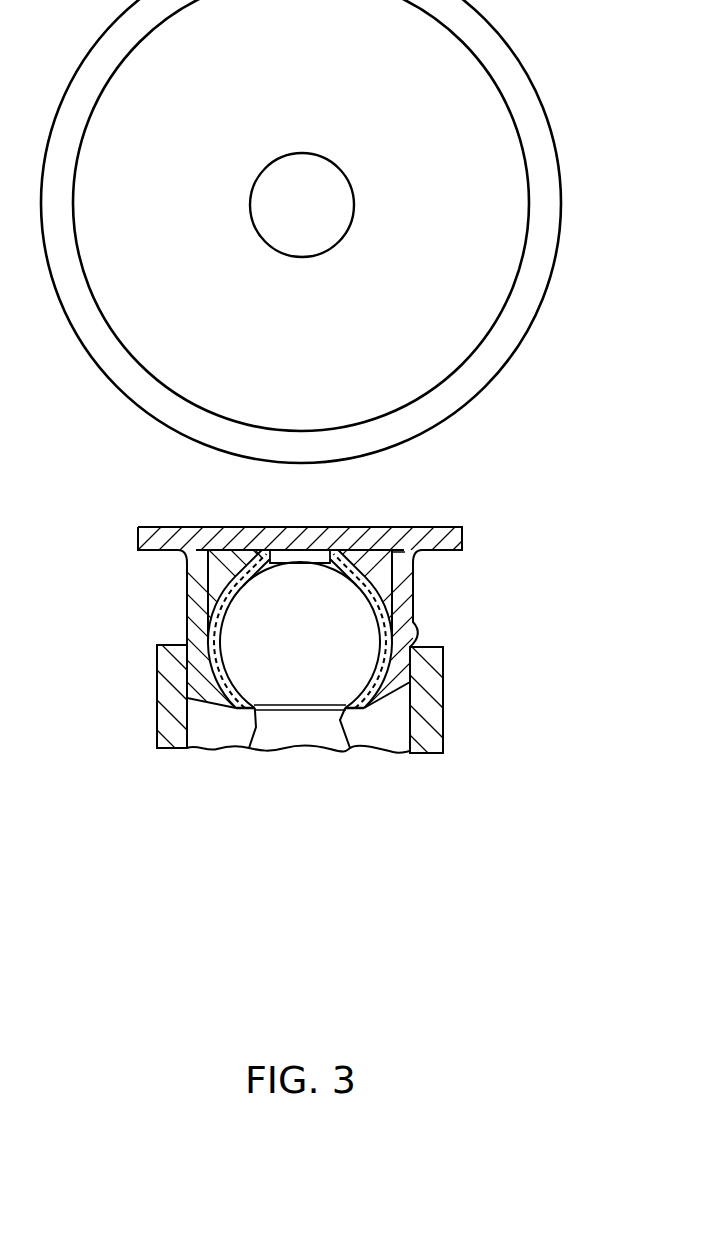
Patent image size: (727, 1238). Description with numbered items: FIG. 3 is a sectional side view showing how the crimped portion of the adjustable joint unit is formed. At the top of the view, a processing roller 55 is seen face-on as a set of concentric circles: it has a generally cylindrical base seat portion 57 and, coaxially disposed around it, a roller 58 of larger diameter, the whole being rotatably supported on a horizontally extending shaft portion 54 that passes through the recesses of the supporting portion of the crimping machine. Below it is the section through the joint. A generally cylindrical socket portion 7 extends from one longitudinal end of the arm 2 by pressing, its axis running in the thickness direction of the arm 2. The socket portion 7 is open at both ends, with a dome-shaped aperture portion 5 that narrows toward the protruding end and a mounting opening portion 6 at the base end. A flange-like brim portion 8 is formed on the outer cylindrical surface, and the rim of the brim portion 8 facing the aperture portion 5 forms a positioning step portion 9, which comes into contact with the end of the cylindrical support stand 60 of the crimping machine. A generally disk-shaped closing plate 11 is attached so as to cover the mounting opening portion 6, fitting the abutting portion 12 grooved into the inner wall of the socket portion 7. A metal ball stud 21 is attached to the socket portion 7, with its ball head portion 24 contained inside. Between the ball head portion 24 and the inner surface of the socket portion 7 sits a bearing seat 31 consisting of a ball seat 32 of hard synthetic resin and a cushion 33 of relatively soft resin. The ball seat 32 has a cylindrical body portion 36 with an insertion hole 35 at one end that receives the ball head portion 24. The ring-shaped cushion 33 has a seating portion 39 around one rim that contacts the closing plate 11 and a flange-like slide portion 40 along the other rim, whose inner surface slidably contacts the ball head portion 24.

The arm 2 is at (463, 542).
The aperture portion 5 is at (369, 706).
The mounting opening portion 6 is at (400, 547).
The socket portion 7 is at (416, 607).
The brim portion 8 is at (180, 636).
The positioning step portion 9 is at (157, 647).
The closing plate 11 is at (312, 542).
The abutting portion 12 is at (420, 553).
The ball stud 21 is at (358, 752).
The ball head portion 24 is at (258, 691).
The bearing seat 31 is at (320, 593).
The ball seat 32 is at (380, 634).
The cushion 33 is at (350, 580).
The insertion hole 35 is at (226, 704).
The cylindrical body portion 36 is at (212, 642).
The seating portion 39 is at (262, 553).
The slide portion 40 is at (230, 582).
The shaft portion 54 is at (305, 242).
The processing roller 55 is at (555, 133).
The base seat portion 57 is at (512, 257).
The roller 58 is at (545, 197).
The support stand 60 is at (445, 720).